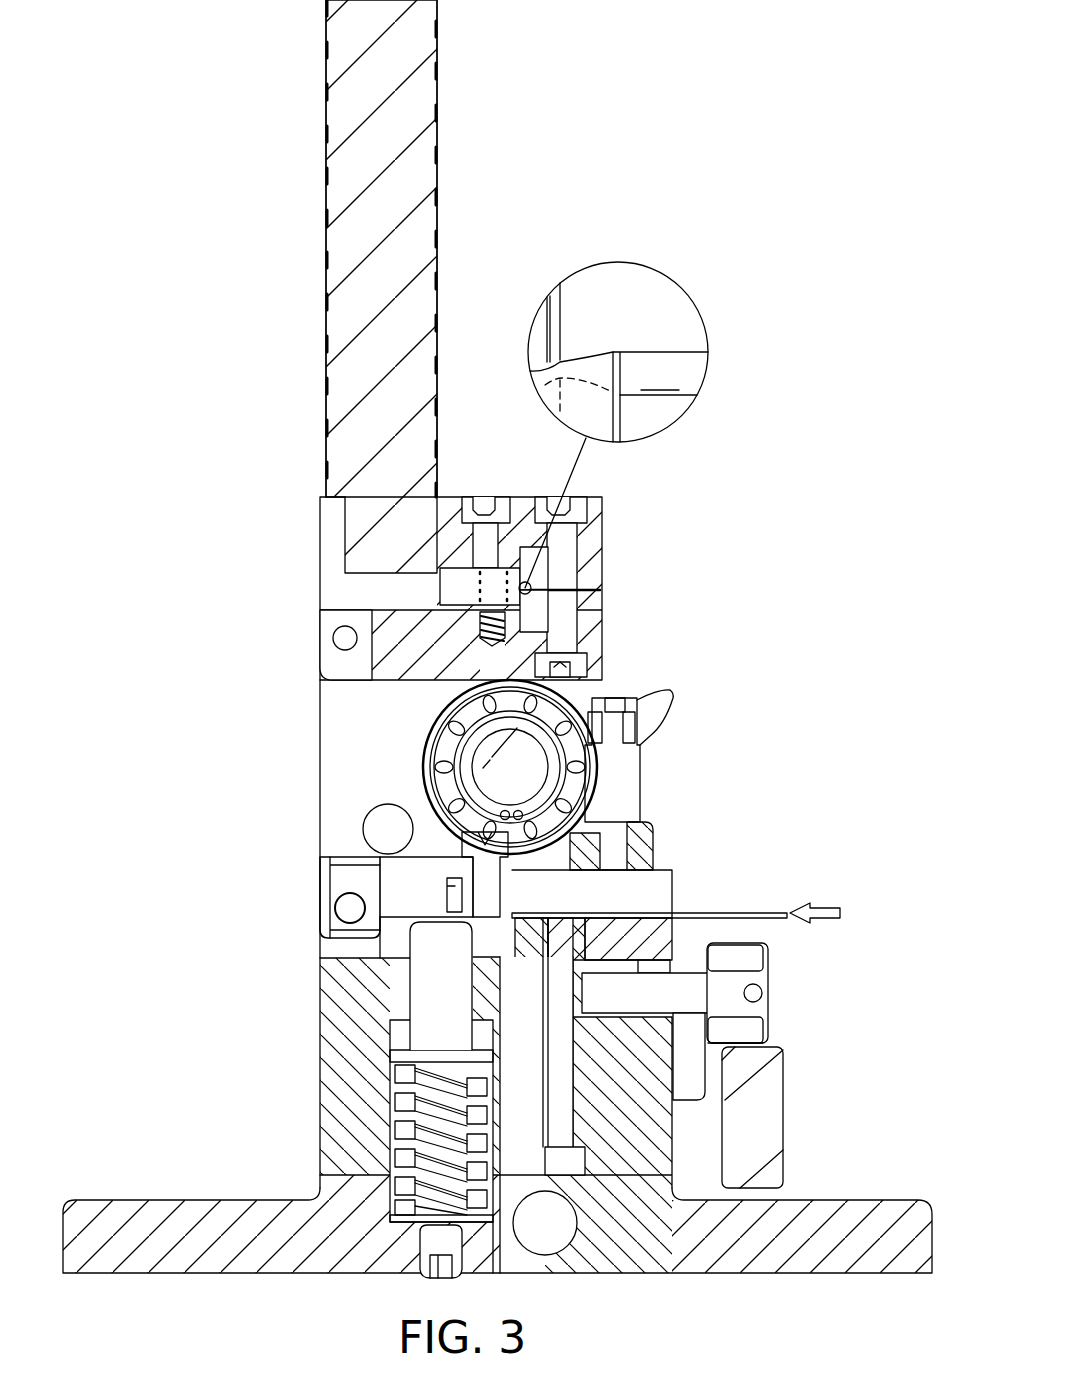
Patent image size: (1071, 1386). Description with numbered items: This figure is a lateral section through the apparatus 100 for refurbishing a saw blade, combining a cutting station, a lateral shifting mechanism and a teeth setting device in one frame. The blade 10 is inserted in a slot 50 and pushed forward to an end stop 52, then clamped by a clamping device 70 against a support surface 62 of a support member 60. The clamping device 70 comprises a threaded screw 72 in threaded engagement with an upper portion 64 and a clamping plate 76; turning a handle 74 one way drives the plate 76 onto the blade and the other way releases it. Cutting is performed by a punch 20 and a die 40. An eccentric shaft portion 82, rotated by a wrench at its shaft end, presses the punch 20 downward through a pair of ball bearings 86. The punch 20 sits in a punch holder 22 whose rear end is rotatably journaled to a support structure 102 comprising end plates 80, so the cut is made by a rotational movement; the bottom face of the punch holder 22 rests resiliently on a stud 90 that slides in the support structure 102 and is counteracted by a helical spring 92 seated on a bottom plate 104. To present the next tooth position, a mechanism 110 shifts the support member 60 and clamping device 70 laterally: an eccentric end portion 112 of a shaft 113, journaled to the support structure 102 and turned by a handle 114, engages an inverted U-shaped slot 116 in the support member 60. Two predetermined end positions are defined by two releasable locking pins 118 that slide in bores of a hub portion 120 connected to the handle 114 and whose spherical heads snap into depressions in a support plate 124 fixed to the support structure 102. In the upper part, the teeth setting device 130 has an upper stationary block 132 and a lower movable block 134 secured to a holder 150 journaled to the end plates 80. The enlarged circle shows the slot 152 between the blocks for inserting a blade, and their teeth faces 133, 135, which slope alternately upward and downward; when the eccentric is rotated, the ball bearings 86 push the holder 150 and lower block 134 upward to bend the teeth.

The blade 10 is at (752, 912).
The punch 20 is at (375, 822).
The punch holder 22 is at (340, 856).
The die 40 is at (530, 960).
The slot 50 is at (665, 915).
The end stop 52 is at (513, 916).
The support member 60 is at (722, 908).
The support surface 62 is at (628, 920).
The upper portion 64 is at (645, 870).
The clamping device 70 is at (690, 738).
The threaded screw 72 is at (598, 830).
The handle 74 is at (655, 690).
The clamping plate 76 is at (600, 868).
The end plates 80 is at (320, 936).
The eccentric shaft portion 82 is at (432, 712).
The ball bearings 86 is at (455, 740).
The stud 90 is at (410, 930).
The helical spring 92 is at (395, 1112).
The apparatus 100 is at (702, 478).
The support structure 102 is at (315, 1072).
The bottom plate 104 is at (208, 1200).
The mechanism 110 is at (818, 958).
The eccentric end portion 112 is at (622, 1013).
The shaft 113 is at (768, 1040).
The handle 114 is at (783, 1160).
The slot 116 is at (625, 978).
The locking pins 118 is at (745, 950).
The hub portion 120 is at (770, 1012).
The support plate 124 is at (700, 1090).
The teeth setting device 130 is at (682, 573).
The upper stationary block 132 is at (597, 580).
The teeth faces 133 is at (560, 368).
The lower movable block 134 is at (598, 625).
The teeth faces 135 is at (545, 385).
The holder 150 is at (365, 605).
The slot 152 is at (613, 428).